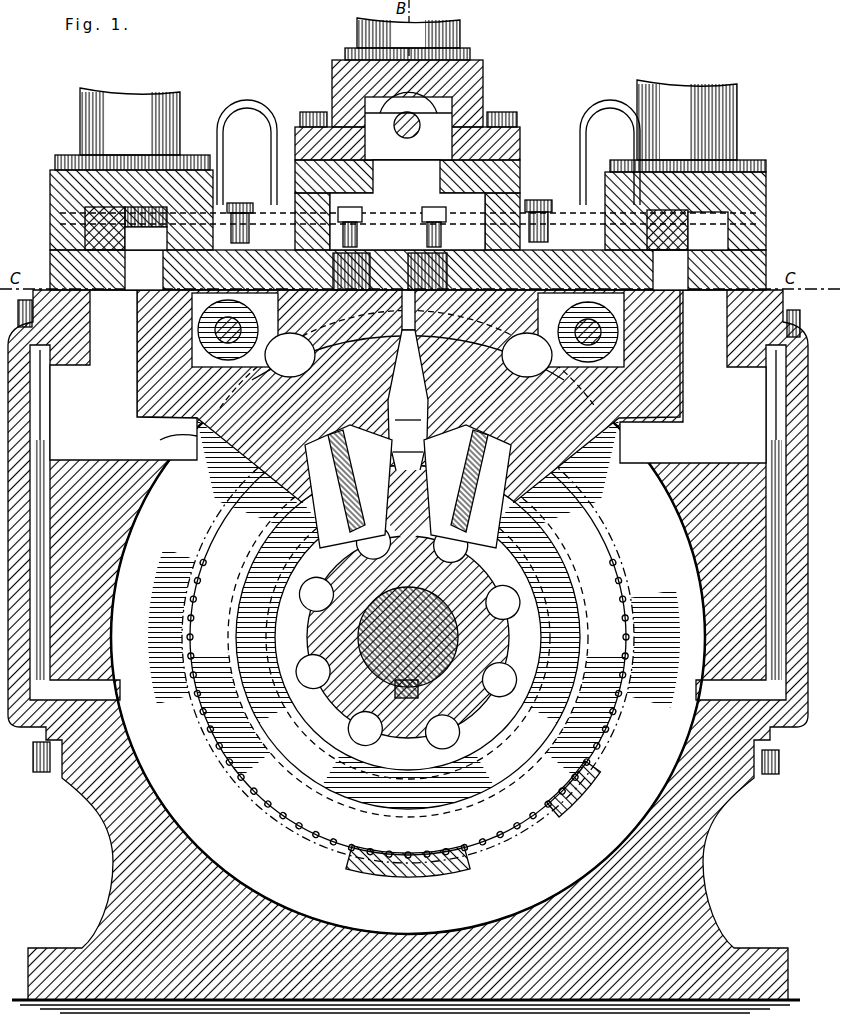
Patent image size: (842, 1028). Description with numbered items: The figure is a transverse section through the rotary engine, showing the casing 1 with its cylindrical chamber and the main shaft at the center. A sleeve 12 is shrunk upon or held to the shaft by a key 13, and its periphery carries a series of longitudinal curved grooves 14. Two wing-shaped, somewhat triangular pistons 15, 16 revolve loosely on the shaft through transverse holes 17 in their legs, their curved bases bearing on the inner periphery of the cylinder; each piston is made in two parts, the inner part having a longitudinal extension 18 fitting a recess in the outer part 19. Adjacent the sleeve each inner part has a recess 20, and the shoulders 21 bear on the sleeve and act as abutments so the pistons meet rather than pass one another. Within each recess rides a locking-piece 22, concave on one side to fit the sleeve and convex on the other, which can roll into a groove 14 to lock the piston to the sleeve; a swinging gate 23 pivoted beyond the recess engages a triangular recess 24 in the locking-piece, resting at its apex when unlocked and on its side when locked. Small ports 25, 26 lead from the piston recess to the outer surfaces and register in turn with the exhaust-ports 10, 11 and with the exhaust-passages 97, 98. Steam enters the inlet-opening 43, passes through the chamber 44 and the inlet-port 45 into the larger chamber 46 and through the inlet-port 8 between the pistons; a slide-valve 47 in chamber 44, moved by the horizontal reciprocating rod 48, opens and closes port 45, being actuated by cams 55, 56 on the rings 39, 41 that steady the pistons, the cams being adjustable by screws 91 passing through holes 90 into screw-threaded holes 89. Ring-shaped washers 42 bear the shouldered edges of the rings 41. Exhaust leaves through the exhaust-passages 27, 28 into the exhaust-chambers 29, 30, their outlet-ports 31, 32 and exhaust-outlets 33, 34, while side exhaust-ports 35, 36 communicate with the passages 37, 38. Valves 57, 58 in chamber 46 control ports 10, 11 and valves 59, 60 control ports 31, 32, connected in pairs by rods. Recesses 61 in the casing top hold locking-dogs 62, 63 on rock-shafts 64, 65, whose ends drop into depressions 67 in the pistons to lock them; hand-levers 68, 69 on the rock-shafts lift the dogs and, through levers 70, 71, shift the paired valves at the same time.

The casing 1 is at (690, 826).
The inlet-port 8 is at (406, 298).
The exhaust-port 10 is at (473, 278).
The exhaust-port 11 is at (505, 708).
The sleeve 12 is at (404, 636).
The key 13 is at (412, 700).
The longitudinal curved grooves 14 is at (492, 680).
The piston 15 is at (150, 565).
The piston 16 is at (645, 543).
The transverse holes 17 is at (335, 585).
The longitudinal extension 18 is at (310, 505).
The outer part of the piston 19 is at (205, 470).
The recess 20 is at (492, 534).
The shoulders 21 is at (578, 574).
The locking-piece 22 is at (345, 555).
The swinging gate 23 is at (408, 486).
The triangular recess 24 is at (492, 448).
The port 25 is at (565, 320).
The port 26 is at (613, 452).
The exhaust-passage 27 is at (135, 450).
The exhaust-passage 28 is at (662, 450).
The exhaust-chamber 29 is at (123, 375).
The exhaust-chamber 30 is at (693, 376).
The outlet-port 31 is at (408, 270).
The outlet-port 32 is at (670, 270).
The exhaust-outlet 33 is at (132, 129).
The exhaust-outlet 34 is at (688, 126).
The exhaust-port 35 is at (100, 693).
The exhaust-port 36 is at (706, 690).
The passage 37 is at (40, 594).
The passage 38 is at (770, 588).
The rings 39 is at (416, 652).
The rings 41 is at (602, 660).
The ring-shaped washers 42 is at (652, 745).
The inlet-opening 43 is at (358, 33).
The chamber 44 is at (452, 112).
The inlet-port 45 is at (407, 205).
The chamber 46 is at (410, 223).
The slide-valve 47 is at (392, 140).
The reciprocating rod 48 is at (465, 83).
The cam 55 is at (572, 808).
The cam 56 is at (425, 875).
The valve 57 is at (436, 270).
The valve 58 is at (352, 272).
The valve 59 is at (131, 210).
The valve 60 is at (685, 211).
The recesses 61 is at (242, 318).
The locking-dog 62 is at (611, 327).
The locking-dog 63 is at (296, 295).
The rock-shaft 64 is at (640, 322).
The rock-shaft 65 is at (192, 330).
The depressions 67 is at (408, 359).
The hand-lever 68 is at (610, 152).
The hand-lever 69 is at (247, 152).
The lever 70 is at (538, 204).
The lever 71 is at (243, 200).
The screw-threaded holes 89 is at (230, 596).
The holes 90 is at (588, 797).
The screws 91 is at (570, 822).
The exhaust-passage 97 is at (145, 393).
The exhaust-passage 98 is at (690, 388).